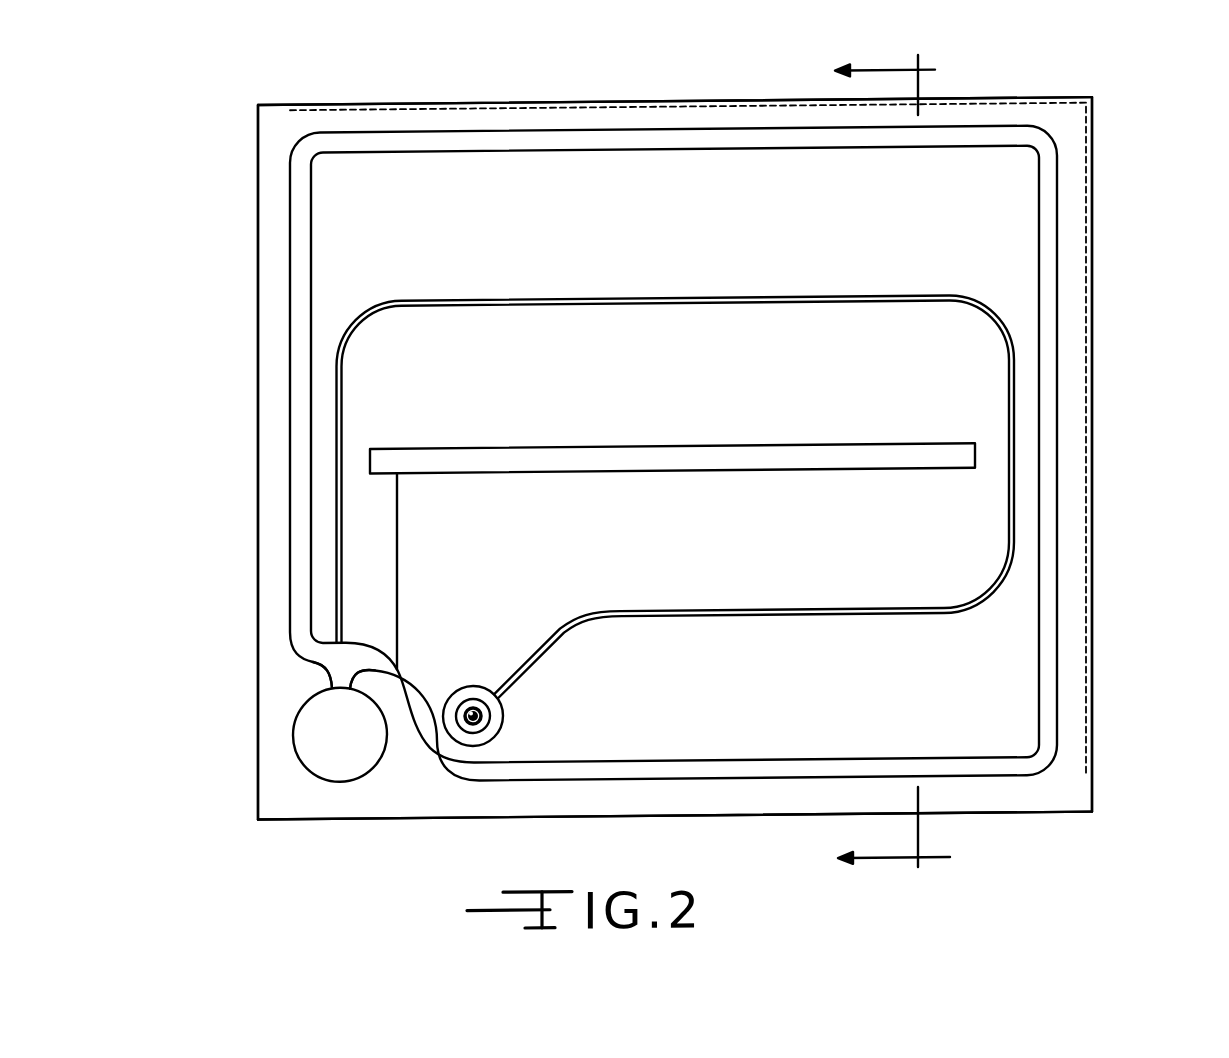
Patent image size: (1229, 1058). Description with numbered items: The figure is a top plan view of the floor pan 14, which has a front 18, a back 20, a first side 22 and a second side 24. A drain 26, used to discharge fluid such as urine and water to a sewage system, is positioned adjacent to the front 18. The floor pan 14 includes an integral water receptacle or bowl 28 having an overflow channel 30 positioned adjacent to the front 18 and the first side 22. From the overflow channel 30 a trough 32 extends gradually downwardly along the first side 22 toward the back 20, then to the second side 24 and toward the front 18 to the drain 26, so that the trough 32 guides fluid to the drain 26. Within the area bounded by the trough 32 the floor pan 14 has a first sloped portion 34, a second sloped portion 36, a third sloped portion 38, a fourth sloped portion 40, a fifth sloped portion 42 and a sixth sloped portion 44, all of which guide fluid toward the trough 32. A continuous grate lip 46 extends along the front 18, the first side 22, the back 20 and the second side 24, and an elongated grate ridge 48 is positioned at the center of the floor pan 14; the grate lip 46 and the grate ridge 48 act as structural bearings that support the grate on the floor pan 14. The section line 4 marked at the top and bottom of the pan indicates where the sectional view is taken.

The floor pan 14 is at (1092, 213).
The front 18 is at (470, 822).
The back 20 is at (558, 107).
The first side 22 is at (258, 440).
The second side 24 is at (1092, 358).
The drain 26 is at (505, 716).
The water receptacle or bowl 28 is at (302, 750).
The overflow channel 30 is at (330, 683).
The trough 32 is at (512, 304).
The first sloped portion 34 is at (729, 708).
The second sloped portion 36 is at (663, 554).
The third sloped portion 38 is at (654, 397).
The fourth sloped portion 40 is at (668, 236).
The fifth sloped portion 42 is at (379, 568).
The sixth sloped portion 44 is at (476, 579).
The grate lip 46 is at (690, 145).
The grate ridge 48 is at (767, 449).
The section line 4- 4 is at (892, 462).